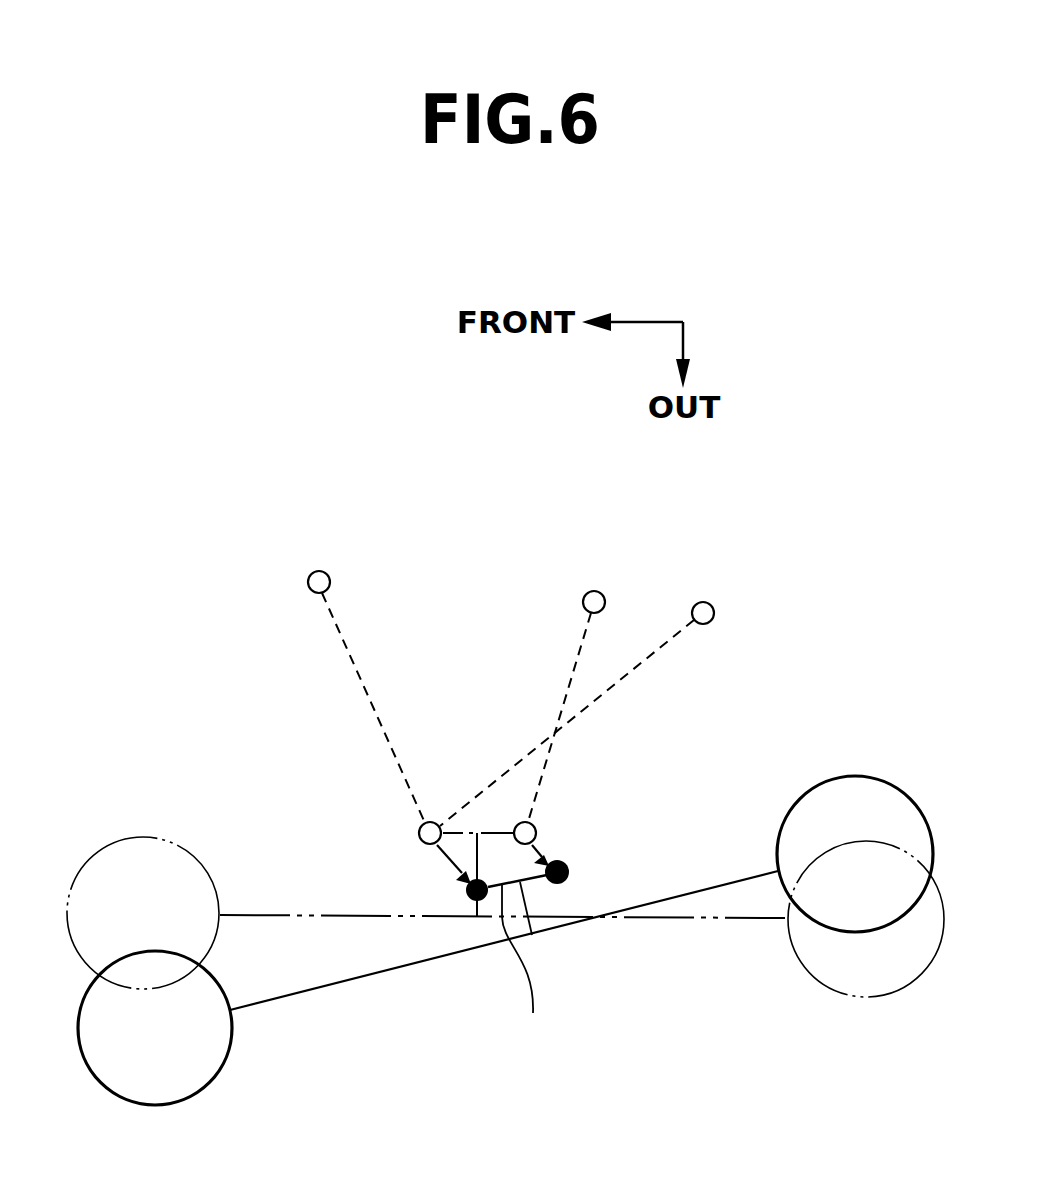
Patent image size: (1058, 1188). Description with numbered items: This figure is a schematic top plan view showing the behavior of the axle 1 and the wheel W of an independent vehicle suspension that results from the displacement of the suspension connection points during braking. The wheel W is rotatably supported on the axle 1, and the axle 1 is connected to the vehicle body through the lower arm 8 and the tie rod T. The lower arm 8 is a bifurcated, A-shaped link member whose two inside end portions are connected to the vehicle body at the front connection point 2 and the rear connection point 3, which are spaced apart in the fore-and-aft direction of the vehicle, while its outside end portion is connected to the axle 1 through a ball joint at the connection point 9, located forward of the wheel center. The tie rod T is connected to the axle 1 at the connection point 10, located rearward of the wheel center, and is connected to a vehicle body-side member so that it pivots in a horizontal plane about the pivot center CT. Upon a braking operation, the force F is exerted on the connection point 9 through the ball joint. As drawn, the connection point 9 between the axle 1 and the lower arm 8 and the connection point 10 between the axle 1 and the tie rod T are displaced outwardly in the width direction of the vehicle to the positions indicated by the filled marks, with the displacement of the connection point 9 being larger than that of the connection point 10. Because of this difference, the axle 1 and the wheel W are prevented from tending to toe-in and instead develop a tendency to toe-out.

The axle 1 is at (520, 970).
The front connection point 2 is at (331, 577).
The rear connection point 3 is at (712, 604).
The lower arm 8 is at (335, 702).
The connection point 9 is at (423, 845).
The connection point 10 is at (537, 830).
The pivot center CT is at (590, 592).
The tie rod T is at (570, 683).
The wheel W is at (853, 777).
The force F is at (355, 833).